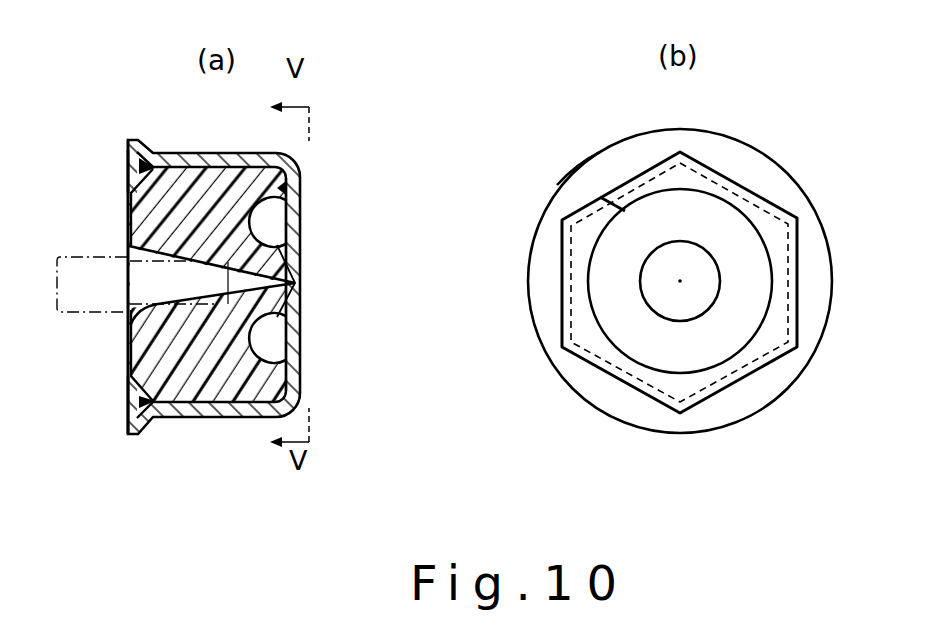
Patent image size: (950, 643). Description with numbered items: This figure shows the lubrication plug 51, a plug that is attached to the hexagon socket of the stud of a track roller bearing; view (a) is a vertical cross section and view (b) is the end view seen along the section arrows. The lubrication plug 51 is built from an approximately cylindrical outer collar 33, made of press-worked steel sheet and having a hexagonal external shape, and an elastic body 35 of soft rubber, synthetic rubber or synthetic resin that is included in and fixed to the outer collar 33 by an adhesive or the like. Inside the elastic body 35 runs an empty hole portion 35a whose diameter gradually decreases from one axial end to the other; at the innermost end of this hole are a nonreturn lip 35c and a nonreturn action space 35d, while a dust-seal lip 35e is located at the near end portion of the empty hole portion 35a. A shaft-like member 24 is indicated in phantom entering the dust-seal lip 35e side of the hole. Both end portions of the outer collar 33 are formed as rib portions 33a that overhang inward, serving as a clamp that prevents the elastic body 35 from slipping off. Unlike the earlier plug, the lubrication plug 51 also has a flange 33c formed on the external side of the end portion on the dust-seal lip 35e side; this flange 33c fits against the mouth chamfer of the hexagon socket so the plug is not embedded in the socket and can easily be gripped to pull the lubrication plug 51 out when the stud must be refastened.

The rotary shaft 24 is at (73, 268).
The outer collar 33 is at (227, 157).
The rib portion 33a is at (130, 191).
The flange 33c is at (125, 149).
The elastic body 35 is at (185, 190).
The empty hole portion 35a is at (248, 288).
The nonreturn lip 35c is at (278, 262).
The nonreturn action space 35d is at (276, 232).
The dust-seal lip 35e is at (127, 257).
The lubrication plug 51 is at (304, 159).